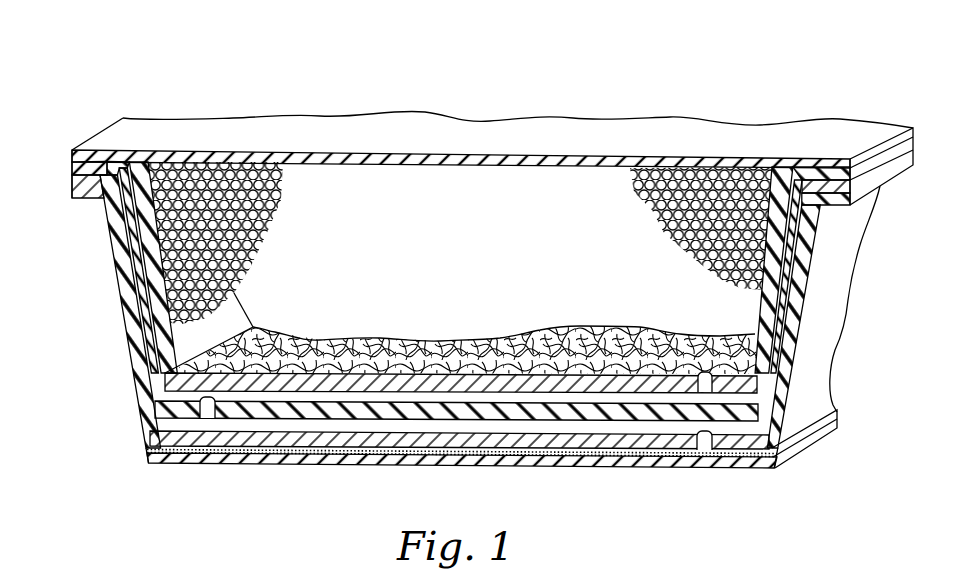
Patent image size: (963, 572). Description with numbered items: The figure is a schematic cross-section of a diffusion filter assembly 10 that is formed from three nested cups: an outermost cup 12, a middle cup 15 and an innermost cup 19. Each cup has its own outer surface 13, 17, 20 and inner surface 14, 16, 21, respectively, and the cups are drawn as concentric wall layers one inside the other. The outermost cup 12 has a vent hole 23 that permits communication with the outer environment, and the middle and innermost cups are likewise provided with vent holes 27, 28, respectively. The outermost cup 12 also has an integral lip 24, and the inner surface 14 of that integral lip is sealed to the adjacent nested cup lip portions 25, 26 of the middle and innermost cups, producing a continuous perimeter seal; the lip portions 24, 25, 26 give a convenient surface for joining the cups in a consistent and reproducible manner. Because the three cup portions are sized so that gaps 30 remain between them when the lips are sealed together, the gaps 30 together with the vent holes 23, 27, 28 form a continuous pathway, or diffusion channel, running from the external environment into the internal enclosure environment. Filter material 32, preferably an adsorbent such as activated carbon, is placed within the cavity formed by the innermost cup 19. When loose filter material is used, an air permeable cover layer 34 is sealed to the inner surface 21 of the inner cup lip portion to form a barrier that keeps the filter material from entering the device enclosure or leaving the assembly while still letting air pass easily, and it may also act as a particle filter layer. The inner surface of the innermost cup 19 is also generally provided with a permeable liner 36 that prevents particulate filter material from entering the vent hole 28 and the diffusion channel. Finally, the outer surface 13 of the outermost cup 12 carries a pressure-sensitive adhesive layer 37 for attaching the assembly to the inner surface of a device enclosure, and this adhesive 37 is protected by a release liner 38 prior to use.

The diffusion filter assembly 10 is at (480, 276).
The outermost cup 12 is at (113, 277).
The outer surface 13 is at (817, 367).
The inner surface 14 is at (810, 253).
The middle cup 15 is at (145, 325).
The inner surface 16 is at (797, 318).
The outer surface 17 is at (803, 280).
The innermost cup 19 is at (165, 355).
The outer surface 20 is at (819, 222).
The inner surface 21 is at (228, 318).
The vent hole 23 is at (703, 445).
The integral lip 24 is at (96, 192).
The lip portion 25 is at (100, 175).
The lip portion 26 is at (86, 160).
The vent hole 27 is at (206, 410).
The vent hole 28 is at (705, 389).
The gaps 30 is at (657, 400).
The filter material 32 is at (268, 221).
The air permeable cover layer 34 is at (192, 126).
The permeable liner 36 is at (407, 337).
The pressure-sensitive adhesive layer 37 is at (821, 430).
The release liner 38 is at (803, 451).